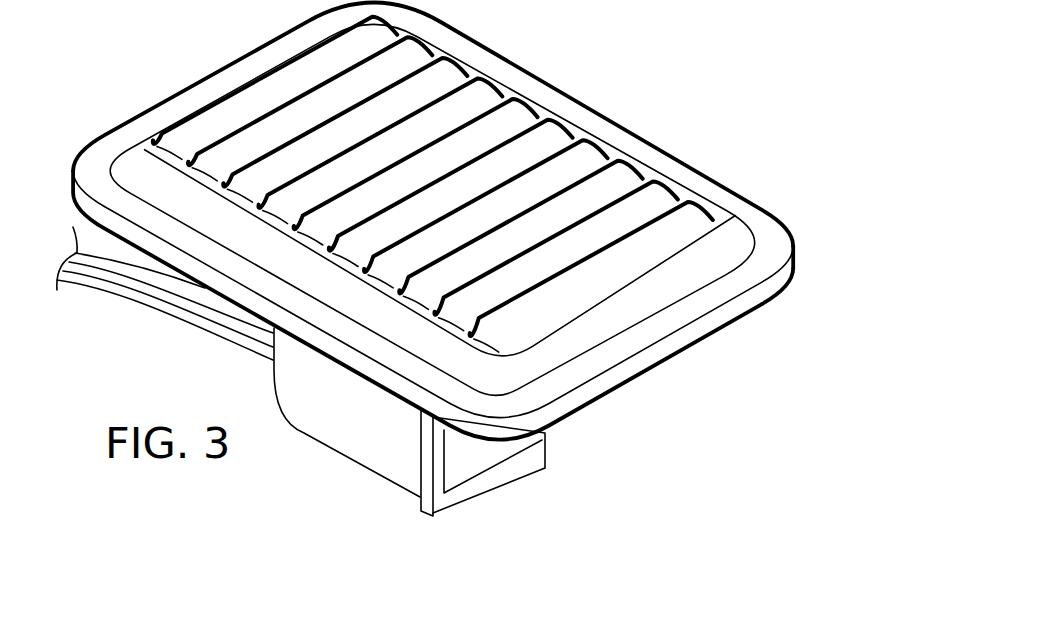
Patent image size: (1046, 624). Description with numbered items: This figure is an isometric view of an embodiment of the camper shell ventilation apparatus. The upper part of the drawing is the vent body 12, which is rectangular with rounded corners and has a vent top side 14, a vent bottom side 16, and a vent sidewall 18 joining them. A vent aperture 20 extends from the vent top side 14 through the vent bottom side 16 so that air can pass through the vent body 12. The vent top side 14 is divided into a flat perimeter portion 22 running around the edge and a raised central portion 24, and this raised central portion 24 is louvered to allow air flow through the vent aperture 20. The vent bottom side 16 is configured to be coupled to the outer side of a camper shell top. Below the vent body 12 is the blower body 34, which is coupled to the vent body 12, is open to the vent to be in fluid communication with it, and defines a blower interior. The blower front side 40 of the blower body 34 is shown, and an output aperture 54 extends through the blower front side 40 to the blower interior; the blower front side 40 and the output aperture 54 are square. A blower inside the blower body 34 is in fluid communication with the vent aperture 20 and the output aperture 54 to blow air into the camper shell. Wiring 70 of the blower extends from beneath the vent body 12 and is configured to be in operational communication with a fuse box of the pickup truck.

The vent body 12 is at (786, 232).
The vent top side 14 is at (763, 238).
The vent bottom side 16 is at (720, 331).
The vent sidewall 18 is at (783, 287).
The vent aperture 20 is at (572, 188).
The perimeter portion 22 is at (93, 172).
The raised central portion 24 is at (135, 163).
The blower body 34 is at (325, 425).
The blower front side 40 is at (437, 475).
The output aperture 54 is at (485, 458).
The wiring 70 is at (150, 300).